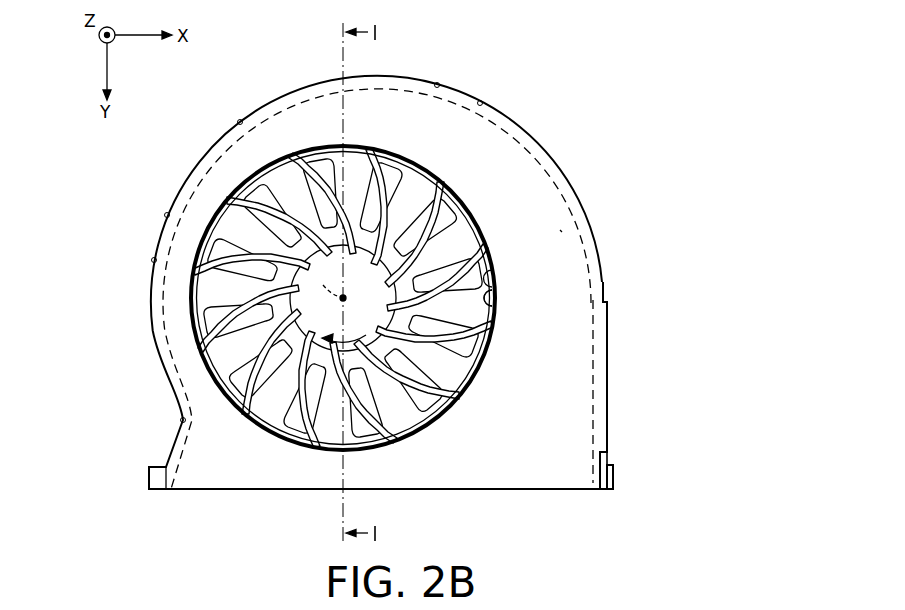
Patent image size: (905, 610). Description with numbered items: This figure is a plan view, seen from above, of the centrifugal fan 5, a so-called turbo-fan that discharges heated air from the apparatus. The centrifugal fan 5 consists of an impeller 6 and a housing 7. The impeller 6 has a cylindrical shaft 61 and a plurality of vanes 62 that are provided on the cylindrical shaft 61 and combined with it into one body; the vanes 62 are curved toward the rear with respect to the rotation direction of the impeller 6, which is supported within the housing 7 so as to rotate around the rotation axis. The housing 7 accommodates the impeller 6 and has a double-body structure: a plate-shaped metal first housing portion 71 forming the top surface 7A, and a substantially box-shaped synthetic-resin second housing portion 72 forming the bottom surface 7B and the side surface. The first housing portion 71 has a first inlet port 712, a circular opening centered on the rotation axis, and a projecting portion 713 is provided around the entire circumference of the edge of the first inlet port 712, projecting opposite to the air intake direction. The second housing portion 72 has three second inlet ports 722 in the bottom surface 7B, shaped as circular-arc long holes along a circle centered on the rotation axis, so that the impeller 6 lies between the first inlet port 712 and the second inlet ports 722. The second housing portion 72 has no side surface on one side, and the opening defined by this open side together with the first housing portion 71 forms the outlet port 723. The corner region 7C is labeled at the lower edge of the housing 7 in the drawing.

The centrifugal fan 5 is at (403, 255).
The impeller 6 is at (403, 282).
The cylindrical shaft 61 is at (393, 297).
The vanes 62 is at (430, 217).
The housing 7 is at (432, 346).
The first housing portion 71 is at (583, 352).
The second housing portion 72 is at (462, 358).
The top surface 7A is at (560, 230).
The bottom surface 7B is at (462, 373).
The impeller corner portion 7C is at (596, 470).
The first inlet port 712 is at (482, 287).
The projecting portion 713 is at (492, 250).
The second inlet ports 722 is at (473, 302).
The outlet port 723 is at (527, 491).